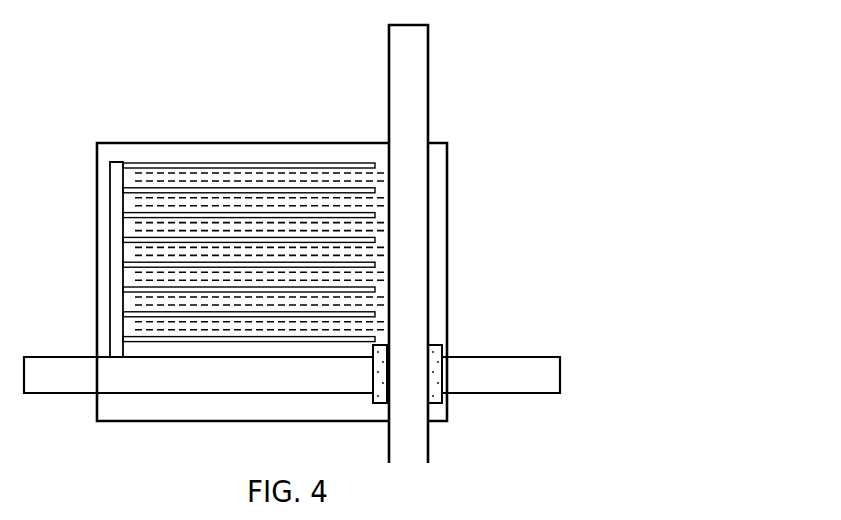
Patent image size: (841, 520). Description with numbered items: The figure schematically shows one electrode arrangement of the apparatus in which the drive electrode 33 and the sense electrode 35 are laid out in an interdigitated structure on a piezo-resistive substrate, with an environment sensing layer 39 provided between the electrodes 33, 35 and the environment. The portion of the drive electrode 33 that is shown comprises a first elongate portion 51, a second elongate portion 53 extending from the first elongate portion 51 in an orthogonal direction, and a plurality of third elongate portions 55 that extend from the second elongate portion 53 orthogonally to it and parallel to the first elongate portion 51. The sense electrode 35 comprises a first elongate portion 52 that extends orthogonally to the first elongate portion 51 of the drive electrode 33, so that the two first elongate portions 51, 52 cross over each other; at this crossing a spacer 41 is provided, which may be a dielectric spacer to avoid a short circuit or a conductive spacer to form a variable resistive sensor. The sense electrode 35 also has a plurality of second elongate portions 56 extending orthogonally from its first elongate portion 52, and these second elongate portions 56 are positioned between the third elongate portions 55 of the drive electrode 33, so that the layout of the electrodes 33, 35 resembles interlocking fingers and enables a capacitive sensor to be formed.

The drive electrode 33 is at (540, 397).
The sense electrode 35 is at (434, 91).
The environment sensing layer 39 is at (450, 212).
The spacer 41 is at (445, 353).
The first elongate portion 51 is at (63, 393).
The first elongate portion 52 is at (418, 127).
The second elongate portion 53 is at (115, 280).
The third elongate portions 55 is at (130, 163).
The second elongate portions 56 is at (335, 175).